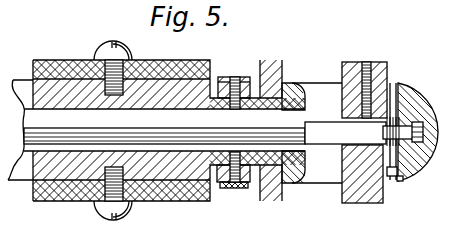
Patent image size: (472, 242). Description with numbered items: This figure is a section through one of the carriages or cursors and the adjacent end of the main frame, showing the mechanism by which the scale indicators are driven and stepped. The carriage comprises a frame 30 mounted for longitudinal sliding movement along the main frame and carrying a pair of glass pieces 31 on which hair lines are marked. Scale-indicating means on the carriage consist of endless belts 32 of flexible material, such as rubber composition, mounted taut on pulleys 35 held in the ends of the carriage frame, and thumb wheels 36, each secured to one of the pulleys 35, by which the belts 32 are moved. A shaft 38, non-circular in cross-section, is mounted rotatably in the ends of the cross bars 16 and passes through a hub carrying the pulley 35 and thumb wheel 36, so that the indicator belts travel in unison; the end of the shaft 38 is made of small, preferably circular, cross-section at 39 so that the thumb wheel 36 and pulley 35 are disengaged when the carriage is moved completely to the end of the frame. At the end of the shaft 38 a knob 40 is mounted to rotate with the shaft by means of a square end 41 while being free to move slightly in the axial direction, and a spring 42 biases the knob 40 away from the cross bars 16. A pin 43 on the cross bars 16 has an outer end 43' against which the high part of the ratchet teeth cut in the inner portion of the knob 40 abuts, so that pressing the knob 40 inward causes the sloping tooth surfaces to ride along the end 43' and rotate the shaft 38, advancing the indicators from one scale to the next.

The cross bars 16 is at (378, 63).
The frame 30 is at (160, 84).
The glass pieces 31 is at (57, 66).
The endless belts 32 is at (233, 78).
The pulleys 35 is at (247, 187).
The thumb wheels 36 is at (305, 168).
The shaft 38 is at (156, 130).
The small cross-section end portion 39 is at (322, 123).
The knob 40 is at (408, 93).
The square end 41 is at (413, 121).
The spring 42 is at (396, 84).
The pin 43 is at (399, 192).
The outer end of pin 43' is at (415, 186).